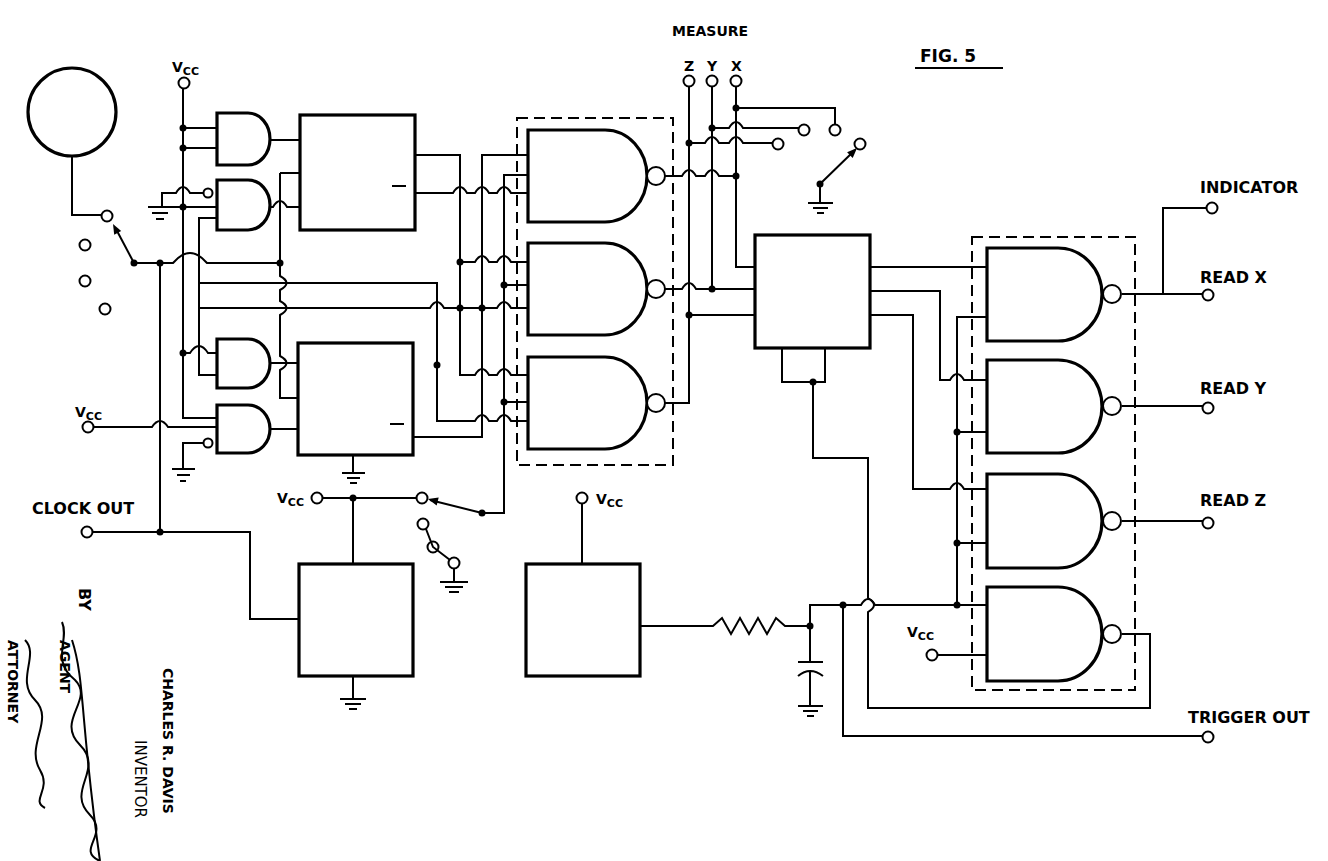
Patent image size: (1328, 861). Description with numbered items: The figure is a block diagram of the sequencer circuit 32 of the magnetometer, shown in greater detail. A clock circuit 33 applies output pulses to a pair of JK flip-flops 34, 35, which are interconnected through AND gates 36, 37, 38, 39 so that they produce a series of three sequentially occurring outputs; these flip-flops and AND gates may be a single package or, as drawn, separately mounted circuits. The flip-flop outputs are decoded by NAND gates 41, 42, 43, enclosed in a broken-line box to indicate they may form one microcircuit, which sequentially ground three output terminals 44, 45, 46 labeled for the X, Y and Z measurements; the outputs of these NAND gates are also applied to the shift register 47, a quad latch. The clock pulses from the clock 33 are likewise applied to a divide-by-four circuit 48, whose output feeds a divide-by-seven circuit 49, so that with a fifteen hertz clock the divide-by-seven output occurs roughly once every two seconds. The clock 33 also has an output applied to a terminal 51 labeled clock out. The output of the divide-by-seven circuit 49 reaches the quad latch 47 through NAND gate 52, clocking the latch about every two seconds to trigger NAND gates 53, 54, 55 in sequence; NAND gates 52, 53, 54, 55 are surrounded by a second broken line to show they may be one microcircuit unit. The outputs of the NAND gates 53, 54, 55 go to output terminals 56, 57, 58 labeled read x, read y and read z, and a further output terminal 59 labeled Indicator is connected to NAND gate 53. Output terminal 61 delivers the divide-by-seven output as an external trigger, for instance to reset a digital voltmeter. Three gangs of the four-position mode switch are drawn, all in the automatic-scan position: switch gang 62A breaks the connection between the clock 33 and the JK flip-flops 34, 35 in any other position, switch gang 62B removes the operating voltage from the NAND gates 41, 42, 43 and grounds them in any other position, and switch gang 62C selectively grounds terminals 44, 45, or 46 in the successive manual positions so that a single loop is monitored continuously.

The sequencer circuit 32 is at (1018, 170).
The clock circuit 33 is at (104, 143).
The JK flip-flop 34 is at (336, 114).
The JK flip-flop 35 is at (328, 343).
The AND gate 36 is at (228, 150).
The AND gate 37 is at (228, 215).
The AND gate 38 is at (228, 374).
The AND gate 39 is at (228, 439).
The NAND gate 41 is at (565, 186).
The NAND gate 42 is at (565, 299).
The NAND gate 43 is at (565, 413).
The output terminal 44 is at (741, 82).
The output terminal 45 is at (718, 77).
The output terminal 46 is at (684, 81).
The shift register 47 is at (842, 235).
The divide-by-four circuit 48 is at (383, 677).
The divide-by-seven circuit 49 is at (598, 679).
The terminal 51 is at (90, 537).
The NAND gate 52 is at (1023, 644).
The NAND gate 53 is at (1023, 304).
The NAND gate 54 is at (1023, 416).
The NAND gate 55 is at (1023, 531).
The output terminal 56 is at (1211, 300).
The output terminal 57 is at (1211, 413).
The output terminal 58 is at (1211, 528).
The output terminal 59 is at (1215, 213).
The output terminal 61 is at (1211, 742).
The switch gang 62A is at (119, 325).
The switch gang 62B is at (478, 527).
The switch gang 62C is at (803, 162).